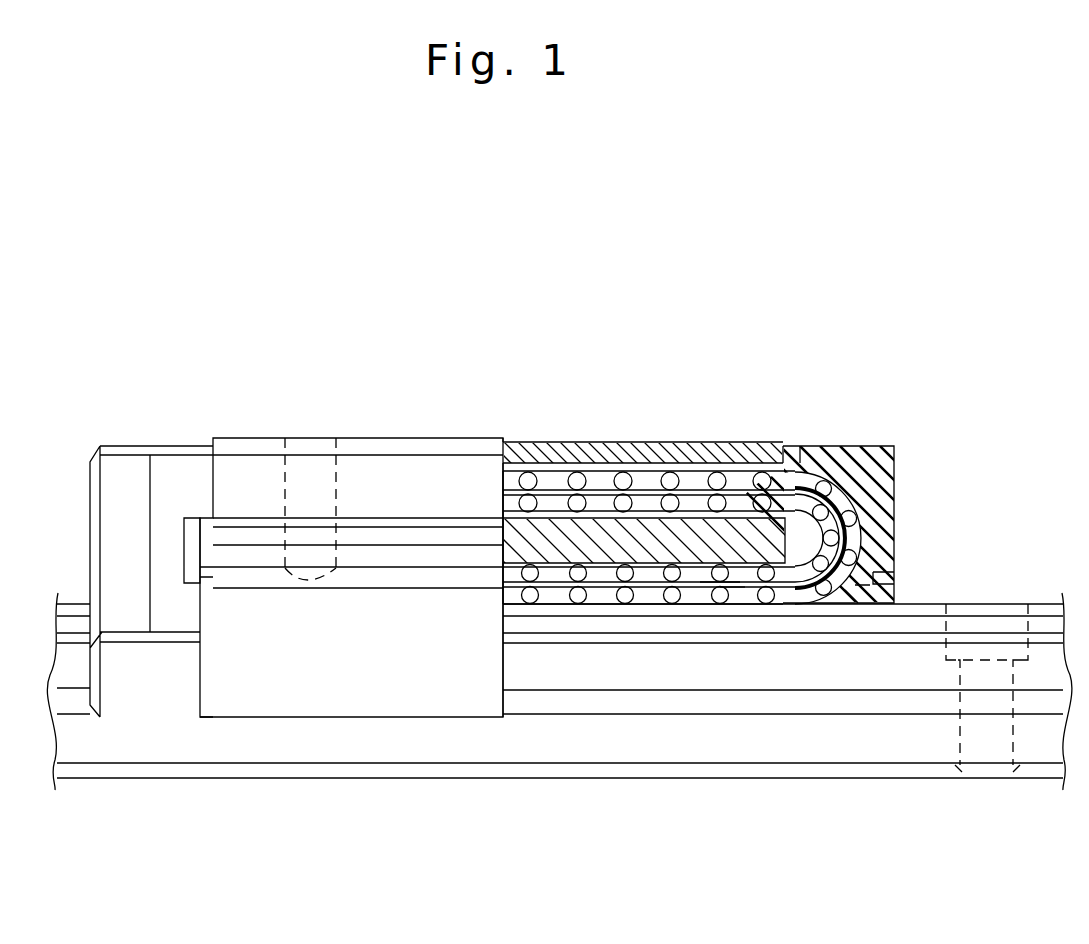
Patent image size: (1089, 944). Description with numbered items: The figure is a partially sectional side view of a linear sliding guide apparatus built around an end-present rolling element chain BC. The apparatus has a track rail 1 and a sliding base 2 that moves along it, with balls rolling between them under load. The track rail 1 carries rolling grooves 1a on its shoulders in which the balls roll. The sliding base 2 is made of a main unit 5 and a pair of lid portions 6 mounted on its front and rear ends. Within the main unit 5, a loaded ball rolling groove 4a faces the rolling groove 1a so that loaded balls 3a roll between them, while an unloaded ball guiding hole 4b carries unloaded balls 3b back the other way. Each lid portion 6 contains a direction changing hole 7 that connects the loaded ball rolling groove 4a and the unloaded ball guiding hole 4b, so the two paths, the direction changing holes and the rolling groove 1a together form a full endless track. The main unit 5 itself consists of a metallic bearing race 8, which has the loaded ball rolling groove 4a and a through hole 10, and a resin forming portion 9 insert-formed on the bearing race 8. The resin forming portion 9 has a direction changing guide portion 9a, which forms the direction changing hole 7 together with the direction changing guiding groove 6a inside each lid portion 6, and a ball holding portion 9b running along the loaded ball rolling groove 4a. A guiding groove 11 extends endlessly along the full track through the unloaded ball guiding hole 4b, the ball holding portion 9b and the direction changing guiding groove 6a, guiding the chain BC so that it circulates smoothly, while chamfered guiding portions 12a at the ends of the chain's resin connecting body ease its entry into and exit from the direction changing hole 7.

The track rail 1 is at (968, 600).
The rolling groove 1a is at (1048, 603).
The sliding base 2 is at (357, 434).
The loaded balls 3a is at (533, 604).
The unloaded balls 3b is at (664, 476).
The loaded ball rolling groove 4a is at (587, 560).
The unloaded ball guiding hole 4b is at (627, 468).
The main unit 5 is at (417, 437).
The lid portion 6 is at (86, 477).
The direction changing guiding groove 6a is at (870, 540).
The direction changing hole 7 is at (868, 604).
The bearing race 8 is at (738, 441).
The resin forming portion 9 is at (186, 443).
The direction changing guide portion 9a is at (850, 470).
The ball holding portion 9b is at (720, 604).
The through hole 10 is at (533, 478).
The guiding groove 11 is at (730, 604).
The chamfered guiding portion 12a is at (705, 604).
The end-present rolling element chain BC is at (627, 604).